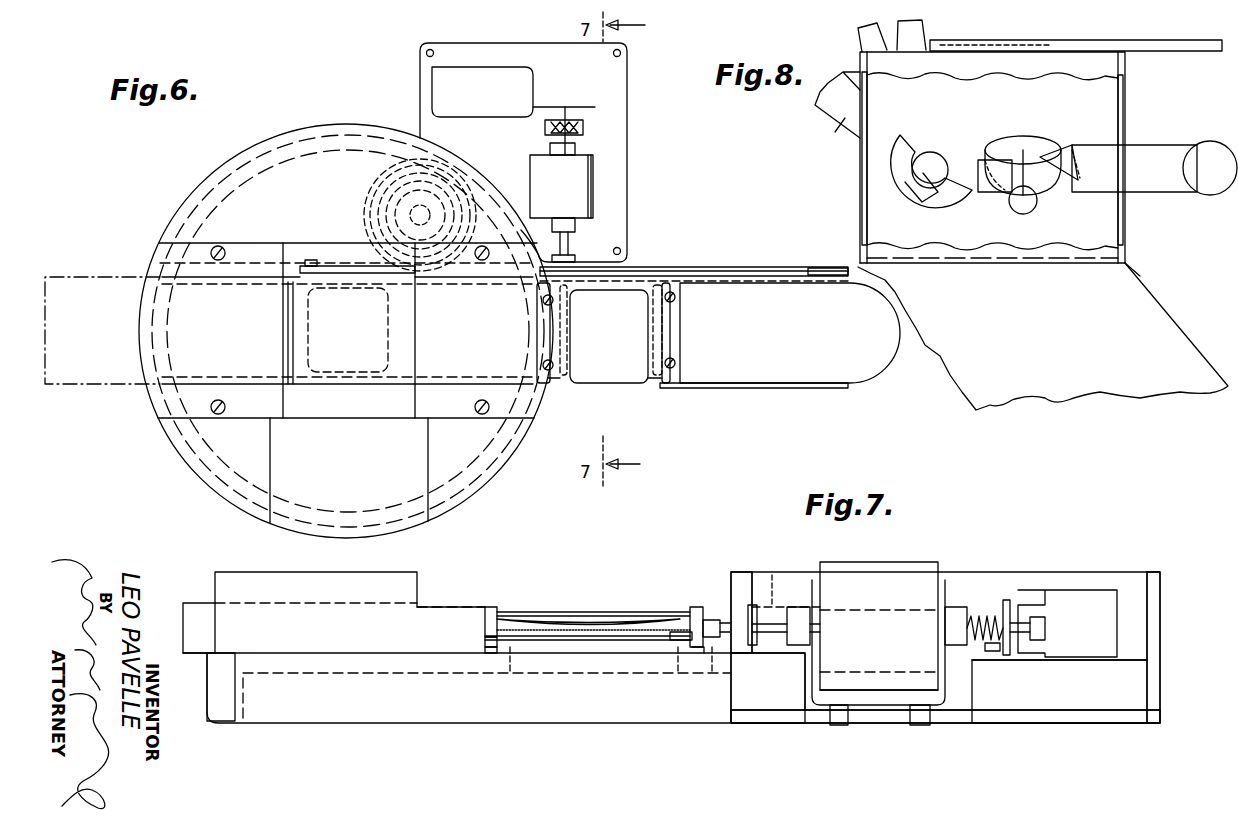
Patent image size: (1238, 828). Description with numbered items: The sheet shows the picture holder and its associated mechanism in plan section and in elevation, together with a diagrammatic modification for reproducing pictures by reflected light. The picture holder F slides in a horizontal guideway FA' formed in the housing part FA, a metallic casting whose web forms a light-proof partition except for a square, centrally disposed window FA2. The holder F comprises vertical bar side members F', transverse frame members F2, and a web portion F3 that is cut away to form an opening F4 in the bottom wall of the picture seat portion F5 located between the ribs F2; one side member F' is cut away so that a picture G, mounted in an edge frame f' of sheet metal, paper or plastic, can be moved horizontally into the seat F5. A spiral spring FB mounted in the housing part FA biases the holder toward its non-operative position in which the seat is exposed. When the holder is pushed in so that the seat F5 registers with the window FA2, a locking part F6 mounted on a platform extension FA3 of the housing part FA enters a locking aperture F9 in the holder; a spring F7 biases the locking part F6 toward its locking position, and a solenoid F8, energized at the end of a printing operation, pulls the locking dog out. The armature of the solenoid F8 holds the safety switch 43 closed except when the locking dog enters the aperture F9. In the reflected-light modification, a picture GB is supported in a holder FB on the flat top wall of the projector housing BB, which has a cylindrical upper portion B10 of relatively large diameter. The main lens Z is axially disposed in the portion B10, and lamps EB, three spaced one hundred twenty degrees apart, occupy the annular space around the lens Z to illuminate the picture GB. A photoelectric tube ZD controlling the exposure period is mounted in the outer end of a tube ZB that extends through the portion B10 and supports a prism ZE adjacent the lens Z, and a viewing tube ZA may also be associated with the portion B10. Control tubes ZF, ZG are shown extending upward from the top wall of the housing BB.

In FIG. 6, the safety switch 43 is at (482, 92).
In FIG. 6, the spring F7 is at (585, 128).
In FIG. 7, the spring F7 is at (983, 615).
In FIG. 6, the platform extension FA3 is at (627, 158).
In FIG. 7, the platform extension FA3 is at (1040, 572).
In FIG. 6, the solenoid F8 is at (561, 187).
In FIG. 7, the solenoid F8 is at (857, 643).
In FIG. 6, the locking part F6 is at (600, 250).
In FIG. 7, the locking part F6 is at (722, 620).
In FIG. 6, the picture holder F is at (694, 254).
In FIG. 7, the picture holder F is at (593, 581).
In FIG. 6, the side member F' is at (621, 327).
In FIG. 7, the side member F' is at (586, 600).
In FIG. 6, the locking aperture F9 is at (812, 270).
In FIG. 6, the opening F4 is at (624, 337).
In FIG. 6, the transverse frame member F2 is at (562, 378).
In FIG. 7, the transverse frame member F2 is at (680, 640).
In FIG. 6, the web portion F3 is at (766, 366).
In FIG. 6, the housing part FA is at (346, 331).
In FIG. 7, the housing part FA is at (456, 667).
In FIG. 6, the guideway FA' is at (257, 333).
In FIG. 7, the guideway FA' is at (591, 698).
In FIG. 6, the window FA2 is at (390, 330).
In FIG. 6, the spring FB is at (343, 266).
In FIG. 8, the spring FB is at (1145, 50).
In FIG. 7, the picture seat portion F5 is at (525, 620).
In FIG. 7, the picture G is at (580, 628).
In FIG. 7, the edge frame f' is at (587, 672).
In FIG. 8, the lamp terminal ZF is at (870, 22).
In FIG. 8, the lamp terminal ZG is at (870, 30).
In FIG. 8, the picture GB is at (1016, 45).
In FIG. 8, the viewing tube ZA is at (840, 132).
In FIG. 8, the lamp EB is at (1000, 140).
In FIG. 8, the main lens Z is at (985, 195).
In FIG. 8, the prism ZE is at (1050, 180).
In FIG. 8, the tube ZB is at (1160, 192).
In FIG. 8, the photoelectric tube ZD is at (1213, 195).
In FIG. 8, the cylindrical upper portion B10 is at (1128, 246).
In FIG. 8, the projector housing BB is at (1158, 302).